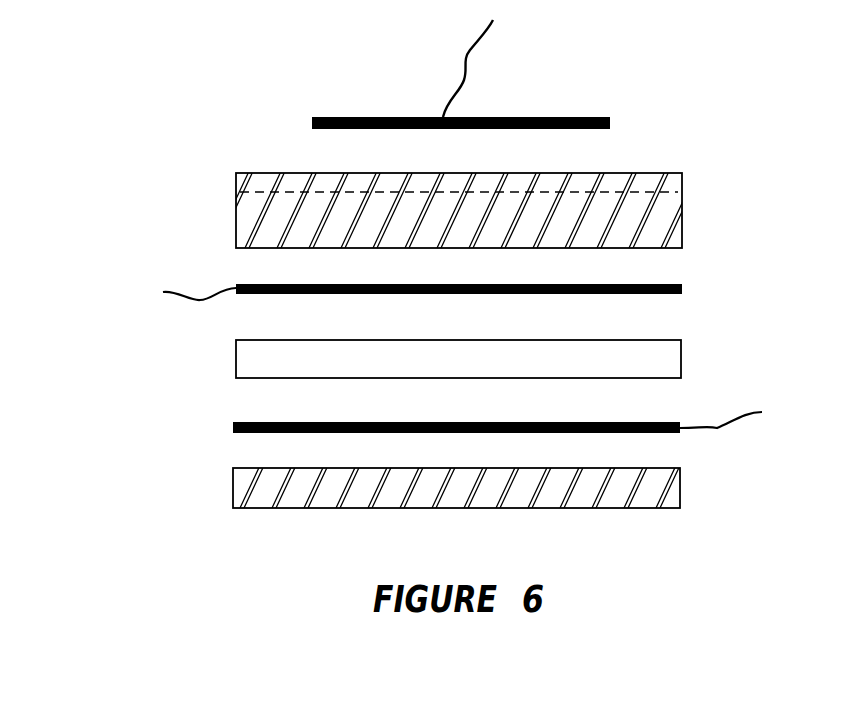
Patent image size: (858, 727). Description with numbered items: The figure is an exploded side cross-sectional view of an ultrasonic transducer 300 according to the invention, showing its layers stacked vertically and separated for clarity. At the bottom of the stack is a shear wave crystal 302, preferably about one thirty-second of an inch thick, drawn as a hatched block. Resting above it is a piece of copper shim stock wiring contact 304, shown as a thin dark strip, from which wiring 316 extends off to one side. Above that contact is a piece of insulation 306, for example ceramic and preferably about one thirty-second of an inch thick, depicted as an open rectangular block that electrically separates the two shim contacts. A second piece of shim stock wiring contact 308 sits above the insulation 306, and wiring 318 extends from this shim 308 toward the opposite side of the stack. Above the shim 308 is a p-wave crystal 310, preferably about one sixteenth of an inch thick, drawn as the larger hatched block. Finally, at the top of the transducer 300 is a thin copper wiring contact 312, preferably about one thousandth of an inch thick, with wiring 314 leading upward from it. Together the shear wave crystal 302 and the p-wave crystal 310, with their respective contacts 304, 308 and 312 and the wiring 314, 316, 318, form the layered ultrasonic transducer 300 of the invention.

The electroluminescent display device 300 is at (185, 258).
The shear wave crystal 302 is at (233, 490).
The shim stock wiring contact 304 is at (233, 428).
The insulation 306 is at (682, 358).
The shim stock wiring contact 308 is at (682, 289).
The p-wave crystal 310 is at (682, 214).
The wiring contact 312 is at (610, 123).
The wiring 314 is at (465, 60).
The wiring 316 is at (717, 428).
The wiring 318 is at (193, 301).